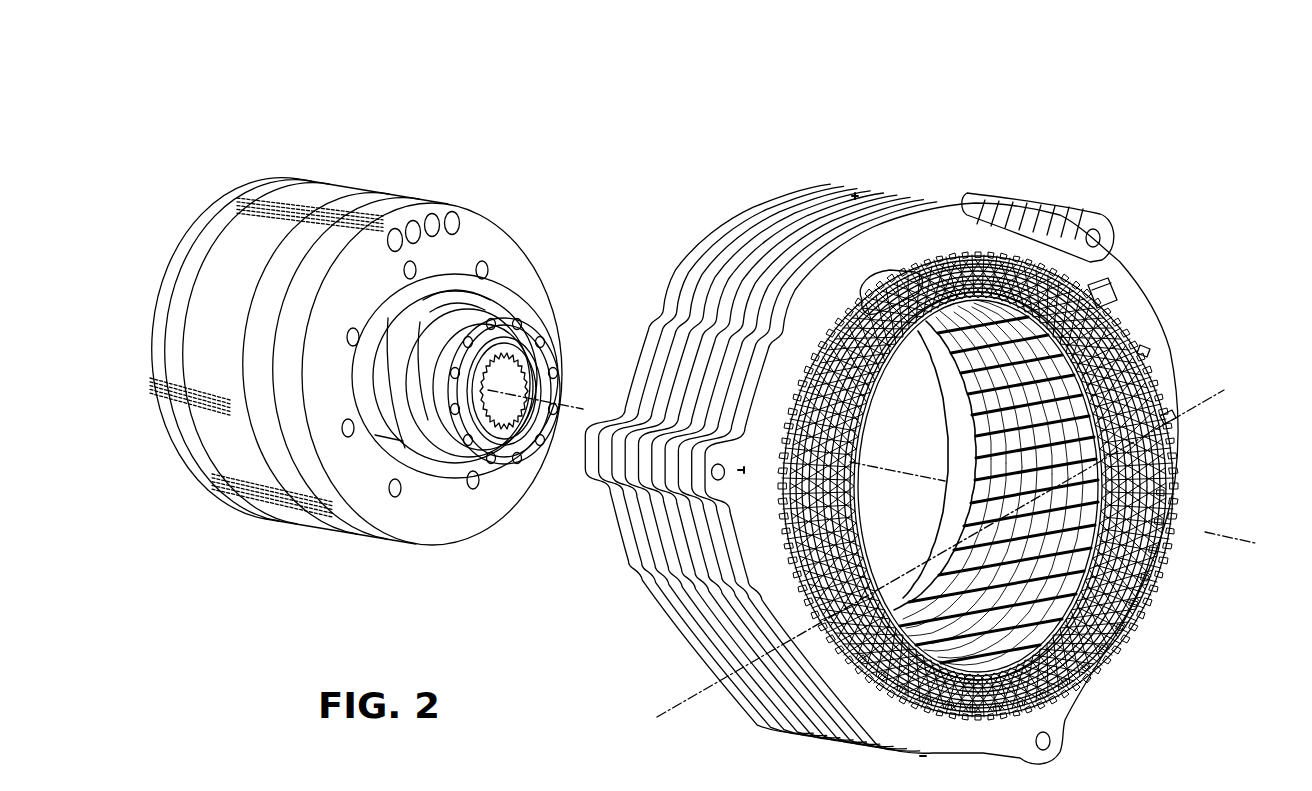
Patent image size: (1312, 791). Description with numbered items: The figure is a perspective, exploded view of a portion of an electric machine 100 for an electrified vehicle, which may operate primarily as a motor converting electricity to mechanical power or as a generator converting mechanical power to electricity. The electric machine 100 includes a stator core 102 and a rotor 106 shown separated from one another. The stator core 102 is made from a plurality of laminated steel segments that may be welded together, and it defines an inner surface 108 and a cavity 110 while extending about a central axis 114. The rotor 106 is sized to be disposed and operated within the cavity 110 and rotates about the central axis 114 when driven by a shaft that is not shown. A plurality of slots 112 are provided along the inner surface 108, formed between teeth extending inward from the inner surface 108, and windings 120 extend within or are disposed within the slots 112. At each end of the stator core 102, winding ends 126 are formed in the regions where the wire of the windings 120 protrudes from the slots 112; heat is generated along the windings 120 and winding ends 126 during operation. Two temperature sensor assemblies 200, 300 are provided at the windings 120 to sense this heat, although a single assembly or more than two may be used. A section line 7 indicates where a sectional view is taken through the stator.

The electric motor assembly 100 is at (393, 81).
The stator assembly 102 is at (890, 186).
The rotor assembly 106 is at (411, 195).
The stator core 108 is at (1060, 365).
The stator housing laminations 110 is at (902, 417).
The stator windings 112 is at (1130, 617).
The axis of rotation 114 is at (1214, 536).
The slots 120 is at (1147, 340).
The hairpin leg ends 126 is at (1180, 450).
The hairpin conductor 200 is at (1173, 413).
The bus bar 300 is at (1117, 280).
The section line 7- 7 is at (655, 675).